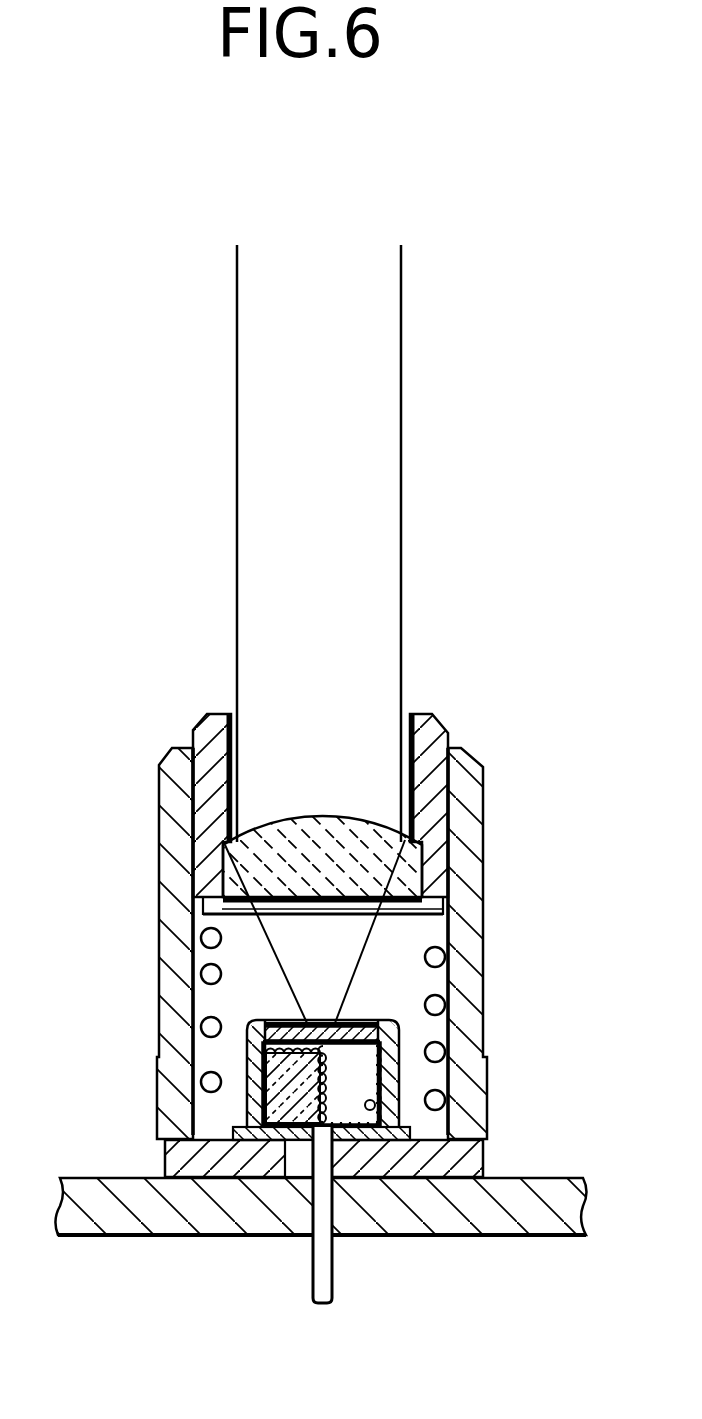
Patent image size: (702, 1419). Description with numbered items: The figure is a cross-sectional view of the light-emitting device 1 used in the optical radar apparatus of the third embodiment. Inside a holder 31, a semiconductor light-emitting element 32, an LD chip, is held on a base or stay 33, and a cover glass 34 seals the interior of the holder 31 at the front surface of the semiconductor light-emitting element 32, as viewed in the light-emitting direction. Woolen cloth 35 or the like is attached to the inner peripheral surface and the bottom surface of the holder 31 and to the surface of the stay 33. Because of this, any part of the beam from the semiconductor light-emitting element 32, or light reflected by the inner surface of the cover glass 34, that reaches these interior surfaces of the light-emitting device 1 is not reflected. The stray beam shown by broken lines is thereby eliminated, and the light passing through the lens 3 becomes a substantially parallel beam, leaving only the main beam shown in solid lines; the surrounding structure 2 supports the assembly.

The light-emitting device 1 is at (345, 1165).
The holder housing 2 is at (173, 961).
The lens 3 is at (227, 873).
The holder 31 is at (400, 1073).
The semiconductor light-emitting element 32 is at (323, 1058).
The base (stay) 33 is at (262, 1114).
The cover glass 34 is at (357, 1027).
The woolen cloth 35 is at (405, 1118).